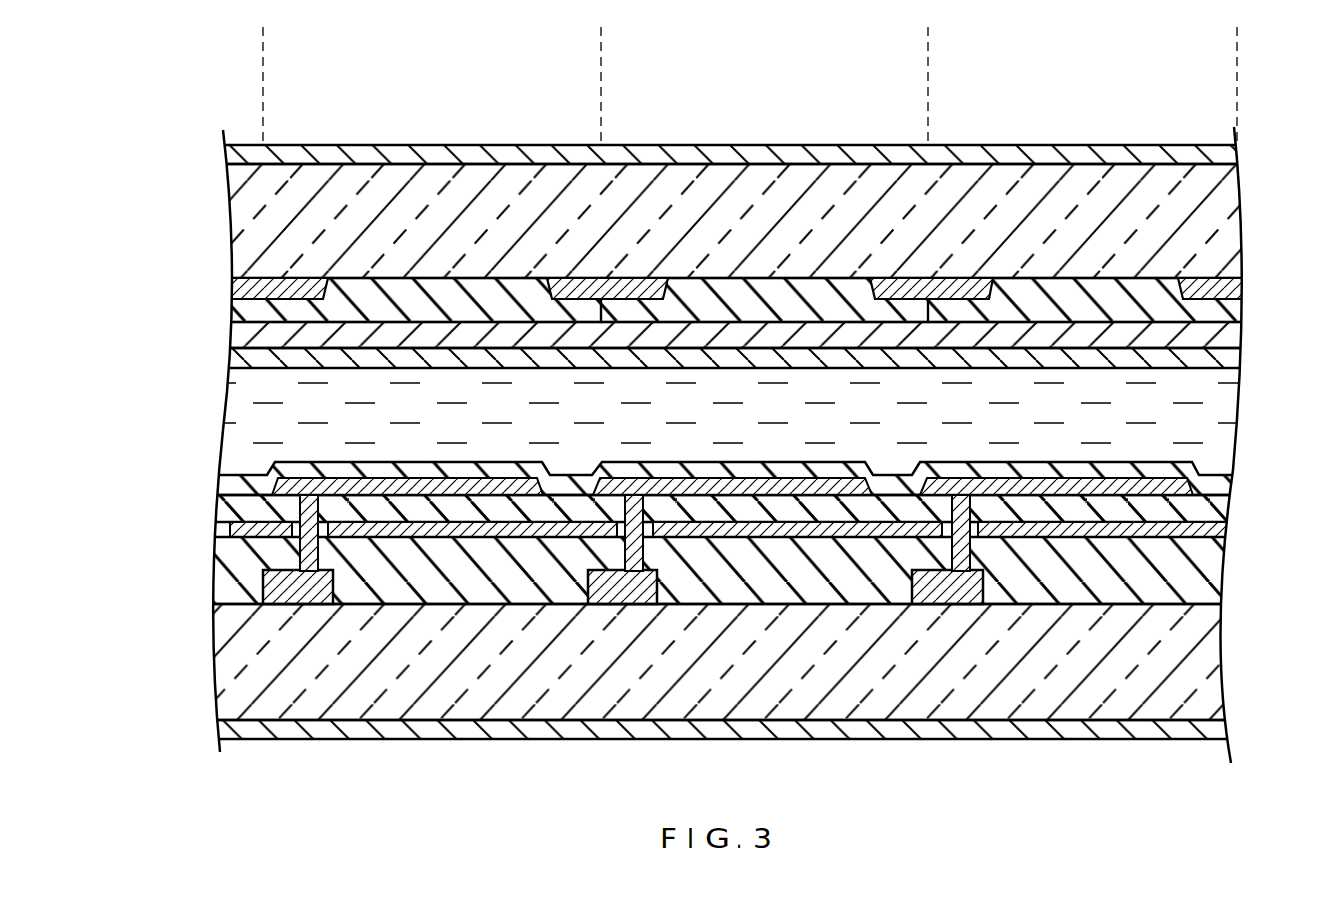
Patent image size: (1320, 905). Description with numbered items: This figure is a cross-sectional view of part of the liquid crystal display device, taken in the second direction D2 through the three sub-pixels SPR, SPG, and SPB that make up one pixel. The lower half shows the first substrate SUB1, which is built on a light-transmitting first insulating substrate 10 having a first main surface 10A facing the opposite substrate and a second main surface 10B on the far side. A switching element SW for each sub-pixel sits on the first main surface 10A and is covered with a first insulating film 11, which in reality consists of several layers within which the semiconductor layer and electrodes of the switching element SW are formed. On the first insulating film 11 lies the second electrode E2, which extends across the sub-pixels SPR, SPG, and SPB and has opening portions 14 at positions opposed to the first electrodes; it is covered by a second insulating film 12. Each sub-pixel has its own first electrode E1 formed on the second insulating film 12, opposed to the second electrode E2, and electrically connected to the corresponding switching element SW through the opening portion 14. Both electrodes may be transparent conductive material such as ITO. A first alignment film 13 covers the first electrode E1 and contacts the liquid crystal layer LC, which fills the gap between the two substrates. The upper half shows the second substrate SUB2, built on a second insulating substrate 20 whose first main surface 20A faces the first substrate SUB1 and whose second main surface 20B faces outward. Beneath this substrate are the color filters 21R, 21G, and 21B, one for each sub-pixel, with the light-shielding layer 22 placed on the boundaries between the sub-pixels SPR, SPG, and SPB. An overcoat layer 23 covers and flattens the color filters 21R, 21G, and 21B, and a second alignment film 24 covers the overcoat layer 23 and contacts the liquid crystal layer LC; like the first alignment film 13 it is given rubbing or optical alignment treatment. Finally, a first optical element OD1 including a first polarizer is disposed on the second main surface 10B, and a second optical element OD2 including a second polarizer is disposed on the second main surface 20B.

The first insulating substrate 10 is at (1208, 650).
The first main surface 10A is at (1126, 601).
The second main surface 10B is at (1107, 721).
The first insulating film 11 is at (1210, 550).
The second insulating film 12 is at (1217, 500).
The first alignment film 13 is at (1212, 476).
The opening portion 14 is at (322, 542).
The second insulating substrate 20 is at (1227, 200).
The first main surface 20A is at (1114, 291).
The second main surface 20B is at (1150, 163).
The red color filter 21R is at (440, 290).
The green color filter 21G is at (732, 288).
The blue color filter 21B is at (1050, 290).
The light-shielding layer 22 is at (258, 283).
The overcoat layer 23 is at (1222, 338).
The second alignment film 24 is at (1222, 355).
The first electrode E1 is at (413, 487).
The second electrode E2 is at (788, 521).
The switching element SW is at (288, 600).
The liquid crystal layer LC is at (238, 412).
The first optical element OD1 is at (1037, 728).
The second optical element OD2 is at (1226, 158).
The first substrate SUB1 is at (210, 552).
The second substrate SUB2 is at (220, 315).
The red sub-pixel SPR is at (601, 73).
The green sub-pixel SPG is at (928, 73).
The blue sub-pixel SPB is at (1237, 73).
The second direction D2 is at (268, 771).